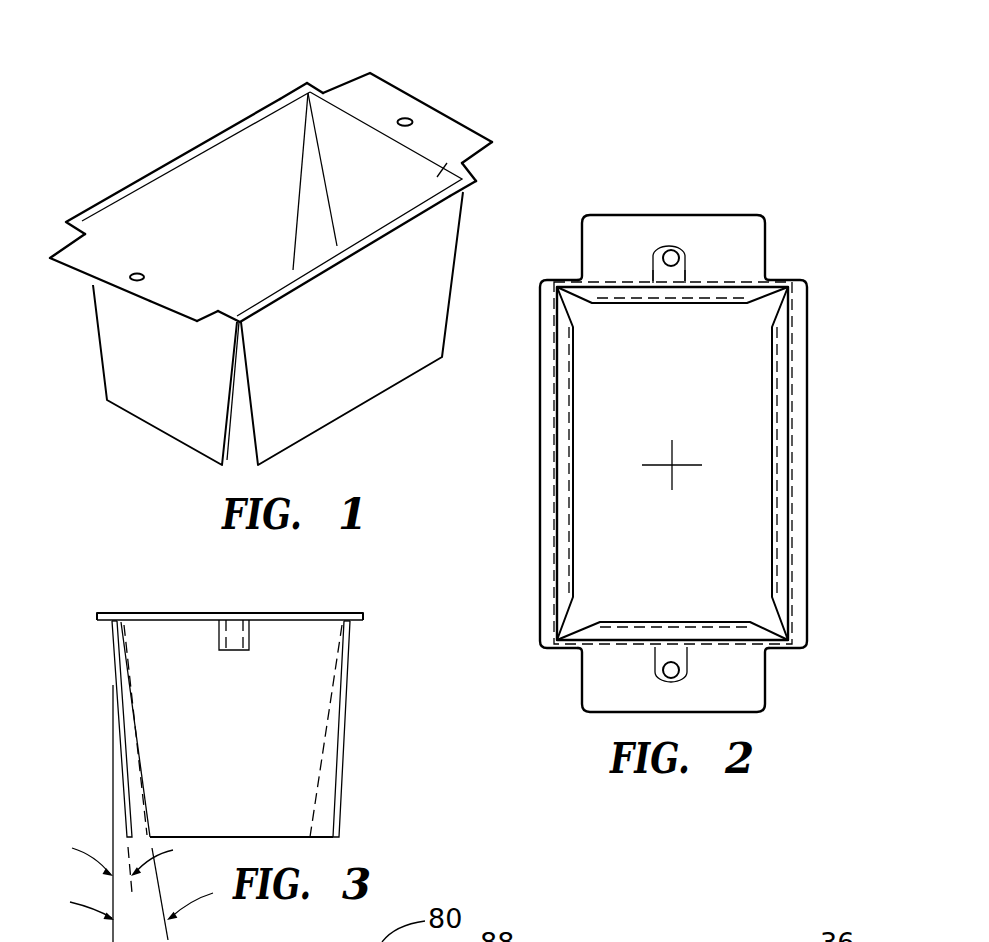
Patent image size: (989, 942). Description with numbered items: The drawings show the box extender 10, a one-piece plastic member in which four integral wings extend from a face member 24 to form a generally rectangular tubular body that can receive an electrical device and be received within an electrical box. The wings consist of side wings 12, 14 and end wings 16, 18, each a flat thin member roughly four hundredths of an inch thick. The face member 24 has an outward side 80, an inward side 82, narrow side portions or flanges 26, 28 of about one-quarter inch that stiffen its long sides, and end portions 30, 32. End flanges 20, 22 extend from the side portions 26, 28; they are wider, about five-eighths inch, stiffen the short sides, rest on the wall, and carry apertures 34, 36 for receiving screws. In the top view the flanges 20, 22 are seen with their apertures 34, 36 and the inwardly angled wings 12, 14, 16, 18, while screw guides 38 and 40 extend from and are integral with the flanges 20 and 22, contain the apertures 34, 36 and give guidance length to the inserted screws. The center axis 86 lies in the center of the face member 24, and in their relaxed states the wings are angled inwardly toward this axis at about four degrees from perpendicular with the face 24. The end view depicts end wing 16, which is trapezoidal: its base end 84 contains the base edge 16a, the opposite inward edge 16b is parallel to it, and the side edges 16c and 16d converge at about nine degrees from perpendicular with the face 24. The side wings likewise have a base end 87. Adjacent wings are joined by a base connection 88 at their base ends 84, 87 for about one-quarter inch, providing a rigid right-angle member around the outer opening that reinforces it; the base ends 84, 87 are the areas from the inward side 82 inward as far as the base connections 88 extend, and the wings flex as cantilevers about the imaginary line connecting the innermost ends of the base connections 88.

In FIG. 1, the box extender 10 is at (357, 46).
In FIG. 2, the box extender 10 is at (786, 241).
In FIG. 3, the box extender 10 is at (374, 712).
In FIG. 1, the side wing 12 is at (369, 361).
In FIG. 2, the side wing 12 is at (777, 430).
In FIG. 3, the side wing 12 is at (342, 768).
In FIG. 1, the side wing 14 is at (240, 237).
In FIG. 2, the side wing 14 is at (568, 457).
In FIG. 3, the side wing 14 is at (122, 752).
In FIG. 1, the end wing 16 is at (183, 391).
In FIG. 2, the end wing 16 is at (625, 628).
In FIG. 3, the end wing 16 is at (231, 728).
In FIG. 3, the base edge 16a is at (306, 622).
In FIG. 3, the inward edge 16b is at (244, 836).
In FIG. 3, the side edge 16c is at (128, 704).
In FIG. 3, the side edge 16d is at (318, 782).
In FIG. 1, the end wing 18 is at (385, 191).
In FIG. 2, the end wing 18 is at (633, 300).
In FIG. 1, the end flange 20 is at (112, 264).
In FIG. 2, the end flange 20 is at (630, 254).
In FIG. 1, the end flange 22 is at (392, 117).
In FIG. 2, the end flange 22 is at (630, 684).
In FIG. 1, the face member 24 is at (85, 212).
In FIG. 3, the face member 24 is at (300, 618).
In FIG. 1, the side flange 26 is at (398, 221).
In FIG. 1, the side flange 28 is at (230, 127).
In FIG. 1, the end portion 30 is at (165, 300).
In FIG. 1, the end portion 32 is at (452, 135).
In FIG. 1, the aperture 34 is at (137, 281).
In FIG. 2, the aperture 34 is at (678, 679).
In FIG. 1, the aperture 36 is at (408, 117).
In FIG. 2, the aperture 36 is at (672, 251).
In FIG. 2, the screw guide 38 is at (688, 660).
In FIG. 3, the screw guide 38 is at (218, 636).
In FIG. 2, the screw guide 40 is at (685, 268).
In FIG. 1, the outward side 80 is at (308, 80).
In FIG. 1, the inward side 82 is at (471, 186).
In FIG. 1, the base end 84 is at (483, 156).
In FIG. 3, the base end 84 is at (138, 631).
In FIG. 2, the center axis 86 is at (673, 462).
In FIG. 1, the base end 87 is at (291, 116).
In FIG. 3, the base connection 88 is at (106, 629).